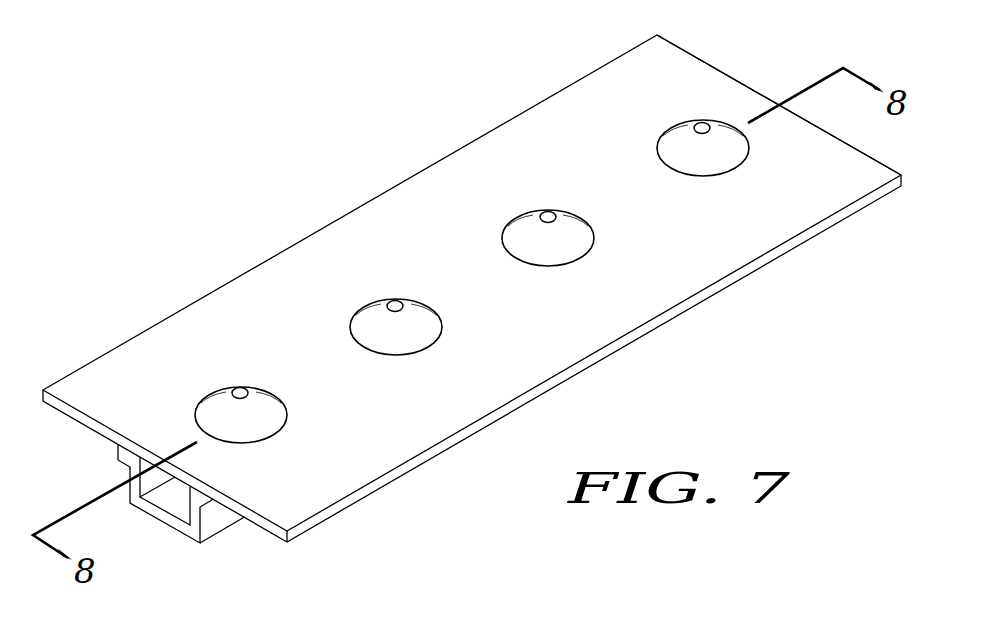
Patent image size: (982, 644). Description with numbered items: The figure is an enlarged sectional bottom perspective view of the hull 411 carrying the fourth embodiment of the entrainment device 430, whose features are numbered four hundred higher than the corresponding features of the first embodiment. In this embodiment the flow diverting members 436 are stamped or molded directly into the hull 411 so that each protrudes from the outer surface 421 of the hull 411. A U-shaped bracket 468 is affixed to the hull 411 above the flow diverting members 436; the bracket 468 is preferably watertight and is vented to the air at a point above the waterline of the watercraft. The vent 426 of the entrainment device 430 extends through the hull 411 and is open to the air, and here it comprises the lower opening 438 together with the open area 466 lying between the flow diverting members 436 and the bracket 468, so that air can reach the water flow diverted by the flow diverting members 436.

The hull 411 is at (543, 123).
The outer surface 421 is at (541, 347).
The vent 426 is at (236, 387).
The entrainment device 430 is at (272, 402).
The flow diverting member 436 is at (217, 405).
The lower opening 438 is at (247, 396).
The open area 466 is at (178, 497).
The U-shaped bracket 468 is at (167, 522).